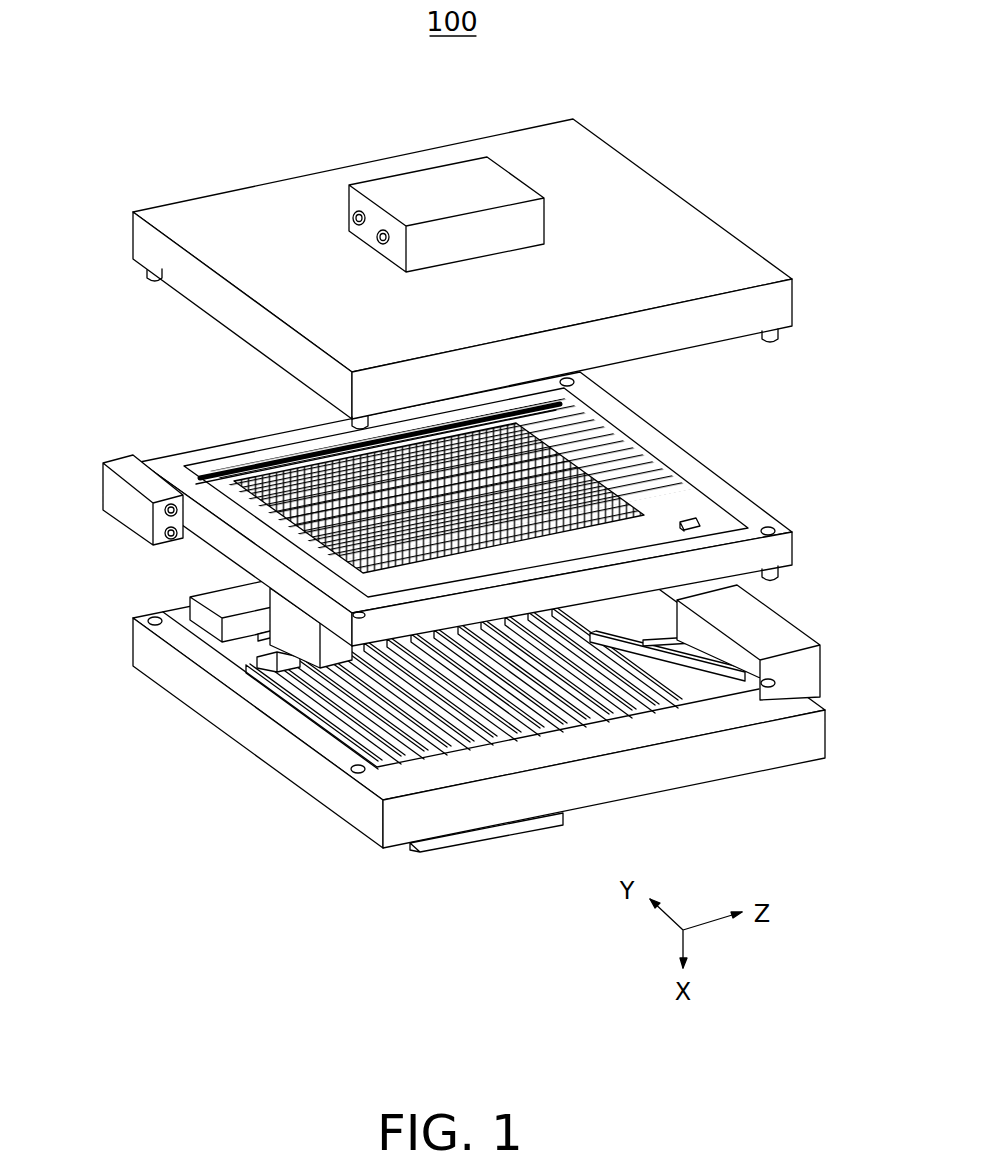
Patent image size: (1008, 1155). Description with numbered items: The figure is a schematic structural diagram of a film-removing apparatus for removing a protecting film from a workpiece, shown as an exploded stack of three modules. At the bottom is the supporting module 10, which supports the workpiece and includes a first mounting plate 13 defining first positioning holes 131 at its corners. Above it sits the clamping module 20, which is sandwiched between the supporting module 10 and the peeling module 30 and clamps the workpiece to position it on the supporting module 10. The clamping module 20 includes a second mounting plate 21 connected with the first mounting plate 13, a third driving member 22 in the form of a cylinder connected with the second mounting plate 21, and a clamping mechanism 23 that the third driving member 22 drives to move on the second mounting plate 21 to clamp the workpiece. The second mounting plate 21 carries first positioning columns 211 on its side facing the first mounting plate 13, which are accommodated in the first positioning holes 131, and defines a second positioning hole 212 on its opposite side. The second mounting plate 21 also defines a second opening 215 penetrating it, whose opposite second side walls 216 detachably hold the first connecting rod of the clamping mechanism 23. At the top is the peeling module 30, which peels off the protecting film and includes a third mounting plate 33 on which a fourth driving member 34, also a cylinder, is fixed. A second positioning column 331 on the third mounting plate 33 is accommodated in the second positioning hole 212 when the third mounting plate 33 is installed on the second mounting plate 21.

The supporting module 10 is at (514, 690).
The first mounting plate 13 is at (813, 732).
The first positioning hole 131 is at (777, 678).
The clamping module 20 is at (450, 509).
The second mounting plate 21 is at (210, 532).
The third driving member 22 is at (110, 496).
The clamping mechanism 23 is at (257, 473).
The first positioning column 211 is at (780, 573).
The second positioning hole 212 is at (774, 529).
The second opening 215 is at (677, 535).
The second side wall 216 is at (548, 414).
The peeling module 30 is at (498, 264).
The third mounting plate 33 is at (710, 242).
The second positioning column 331 is at (777, 341).
The fourth driving member 34 is at (446, 186).